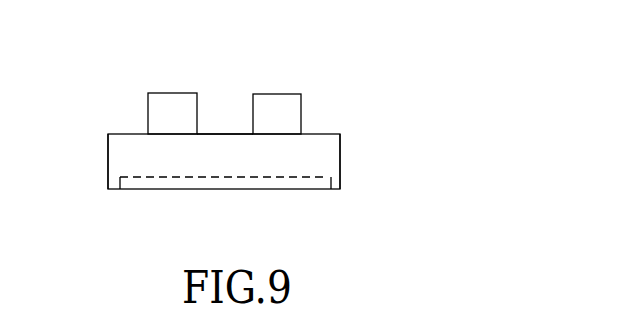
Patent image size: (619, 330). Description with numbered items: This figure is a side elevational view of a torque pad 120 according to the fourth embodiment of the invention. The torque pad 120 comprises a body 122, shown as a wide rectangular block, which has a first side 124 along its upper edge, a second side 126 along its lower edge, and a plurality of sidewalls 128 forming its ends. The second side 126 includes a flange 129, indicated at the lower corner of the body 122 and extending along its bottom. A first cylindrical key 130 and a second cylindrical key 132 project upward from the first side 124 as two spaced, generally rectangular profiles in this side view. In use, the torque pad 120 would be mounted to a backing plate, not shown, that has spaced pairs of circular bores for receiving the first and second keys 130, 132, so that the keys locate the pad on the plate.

The torque pad 120 is at (215, 153).
The body 122 is at (322, 152).
The first side 124 is at (223, 134).
The second side 126 is at (184, 178).
The sidewalls 128 is at (108, 162).
The flange 129 is at (337, 188).
The first cylindrical key 130 is at (167, 111).
The second cylindrical key 132 is at (288, 112).